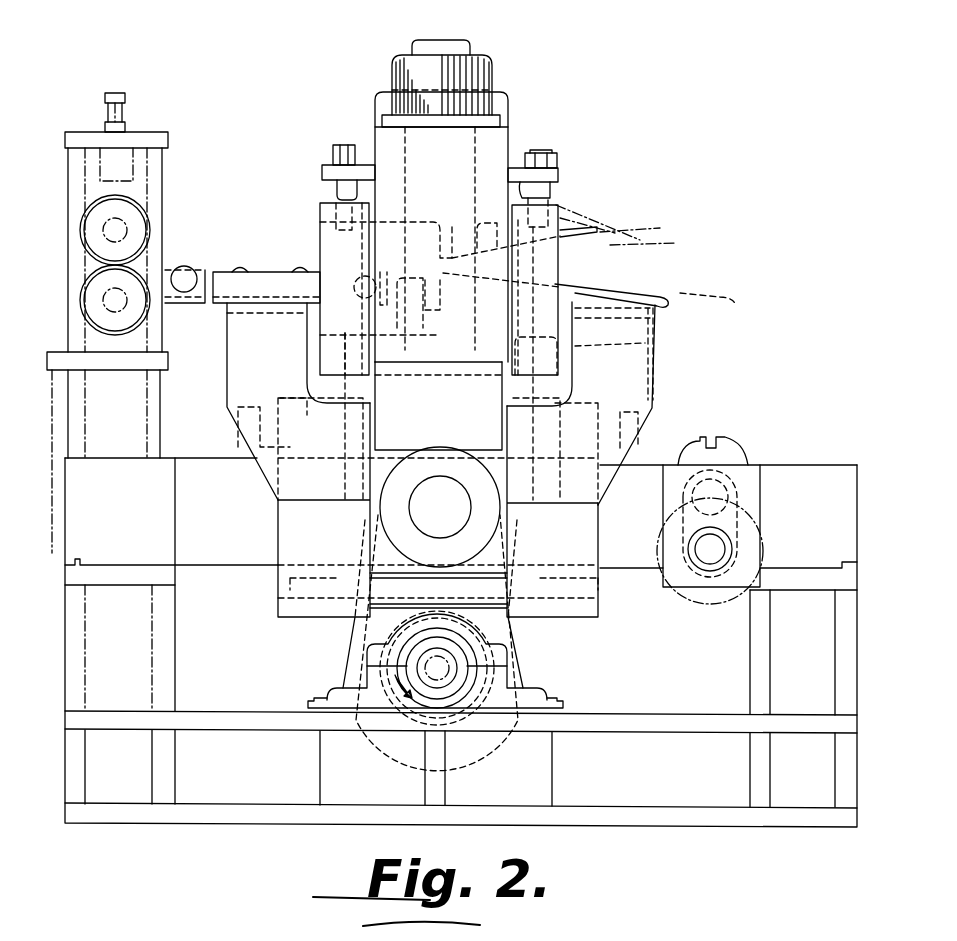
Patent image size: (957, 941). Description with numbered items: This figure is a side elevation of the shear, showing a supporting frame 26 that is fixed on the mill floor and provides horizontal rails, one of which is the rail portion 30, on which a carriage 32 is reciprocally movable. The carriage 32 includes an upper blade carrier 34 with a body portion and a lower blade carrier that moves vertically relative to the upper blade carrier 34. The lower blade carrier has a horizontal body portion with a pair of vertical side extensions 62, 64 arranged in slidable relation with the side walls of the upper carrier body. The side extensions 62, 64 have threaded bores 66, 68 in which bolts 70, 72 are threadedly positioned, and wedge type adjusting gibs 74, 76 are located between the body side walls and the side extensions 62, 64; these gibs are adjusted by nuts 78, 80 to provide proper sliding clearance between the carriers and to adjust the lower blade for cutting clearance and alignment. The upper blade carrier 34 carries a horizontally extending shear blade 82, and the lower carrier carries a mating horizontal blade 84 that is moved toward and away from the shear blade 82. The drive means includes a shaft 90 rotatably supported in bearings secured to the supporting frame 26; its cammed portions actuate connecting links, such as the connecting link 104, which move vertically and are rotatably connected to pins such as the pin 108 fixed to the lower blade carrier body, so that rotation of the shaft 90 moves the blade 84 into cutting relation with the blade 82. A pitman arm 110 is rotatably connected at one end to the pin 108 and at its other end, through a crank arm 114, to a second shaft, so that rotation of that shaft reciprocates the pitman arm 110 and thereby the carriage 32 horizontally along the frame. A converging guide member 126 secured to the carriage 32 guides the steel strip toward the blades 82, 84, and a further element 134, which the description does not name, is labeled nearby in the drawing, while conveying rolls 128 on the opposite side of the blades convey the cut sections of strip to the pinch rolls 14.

The pinch rolls 14 is at (142, 227).
The supporting frame 26 is at (240, 812).
The horizontal rail portion 30 is at (217, 552).
The carriage 32 is at (524, 131).
The upper blade carrier 34 is at (422, 180).
The vertical side extension 62 is at (540, 258).
The vertical side extension 64 is at (330, 240).
The threaded bore 66 is at (550, 210).
The threaded bore 68 is at (330, 213).
The bolt 70 is at (553, 187).
The bolt 72 is at (335, 190).
The wedge type adjusting gib 74 is at (560, 180).
The wedge type adjusting gib 76 is at (322, 165).
The nut 78 is at (540, 153).
The nut 80 is at (335, 148).
The shear blade 82 is at (452, 222).
The horizontal blade 84 is at (442, 308).
The shaft 90 is at (470, 672).
The connecting link 104 is at (510, 630).
The pin 108 is at (370, 520).
The pitman arm 110 is at (597, 607).
The crank arm 114 is at (760, 480).
The converging guide member 126 is at (653, 292).
The conveying rolls 128 is at (237, 266).
The feed rod 134 is at (662, 248).